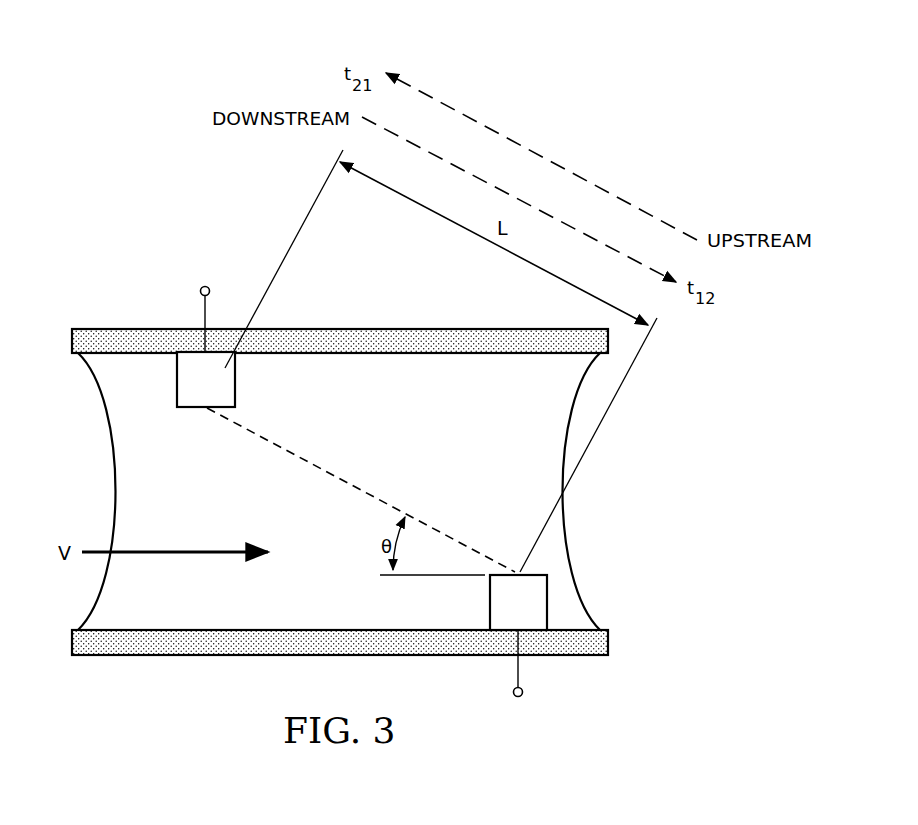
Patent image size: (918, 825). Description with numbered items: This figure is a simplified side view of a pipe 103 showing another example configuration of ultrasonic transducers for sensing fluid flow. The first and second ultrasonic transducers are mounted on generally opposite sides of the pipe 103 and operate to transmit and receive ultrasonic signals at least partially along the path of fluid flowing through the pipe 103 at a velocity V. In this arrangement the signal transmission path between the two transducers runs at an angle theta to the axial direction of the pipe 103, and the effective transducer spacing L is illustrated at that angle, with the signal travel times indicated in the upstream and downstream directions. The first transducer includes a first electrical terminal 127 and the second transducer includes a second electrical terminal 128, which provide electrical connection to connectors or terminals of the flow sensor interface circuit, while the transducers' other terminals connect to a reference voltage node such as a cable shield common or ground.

The pipe 103 is at (410, 326).
The first electrical terminal 127 is at (203, 312).
The second electrical terminal 128 is at (520, 672).